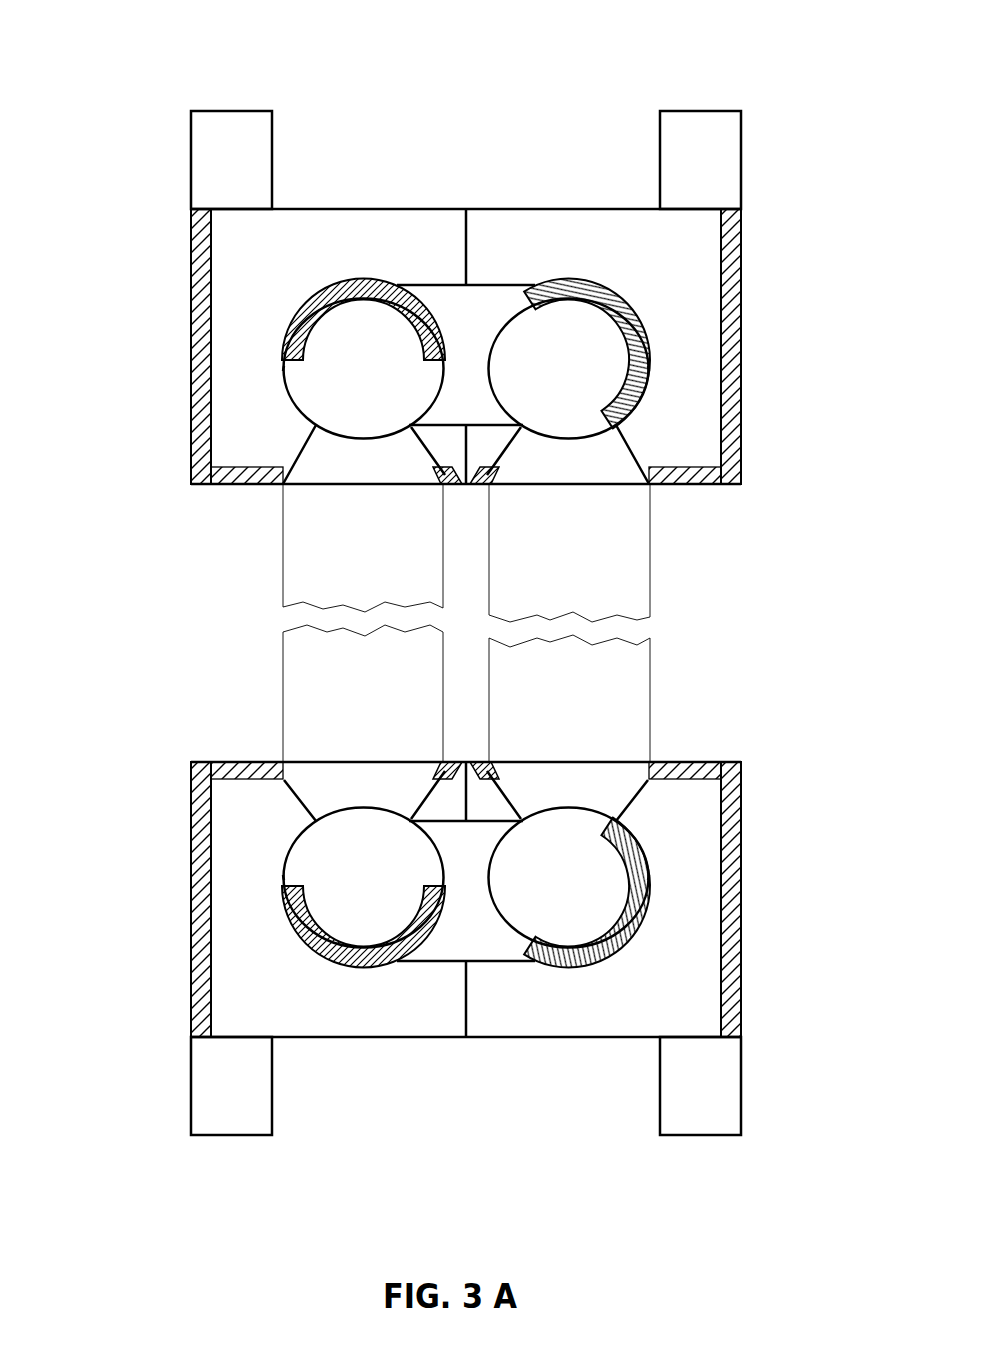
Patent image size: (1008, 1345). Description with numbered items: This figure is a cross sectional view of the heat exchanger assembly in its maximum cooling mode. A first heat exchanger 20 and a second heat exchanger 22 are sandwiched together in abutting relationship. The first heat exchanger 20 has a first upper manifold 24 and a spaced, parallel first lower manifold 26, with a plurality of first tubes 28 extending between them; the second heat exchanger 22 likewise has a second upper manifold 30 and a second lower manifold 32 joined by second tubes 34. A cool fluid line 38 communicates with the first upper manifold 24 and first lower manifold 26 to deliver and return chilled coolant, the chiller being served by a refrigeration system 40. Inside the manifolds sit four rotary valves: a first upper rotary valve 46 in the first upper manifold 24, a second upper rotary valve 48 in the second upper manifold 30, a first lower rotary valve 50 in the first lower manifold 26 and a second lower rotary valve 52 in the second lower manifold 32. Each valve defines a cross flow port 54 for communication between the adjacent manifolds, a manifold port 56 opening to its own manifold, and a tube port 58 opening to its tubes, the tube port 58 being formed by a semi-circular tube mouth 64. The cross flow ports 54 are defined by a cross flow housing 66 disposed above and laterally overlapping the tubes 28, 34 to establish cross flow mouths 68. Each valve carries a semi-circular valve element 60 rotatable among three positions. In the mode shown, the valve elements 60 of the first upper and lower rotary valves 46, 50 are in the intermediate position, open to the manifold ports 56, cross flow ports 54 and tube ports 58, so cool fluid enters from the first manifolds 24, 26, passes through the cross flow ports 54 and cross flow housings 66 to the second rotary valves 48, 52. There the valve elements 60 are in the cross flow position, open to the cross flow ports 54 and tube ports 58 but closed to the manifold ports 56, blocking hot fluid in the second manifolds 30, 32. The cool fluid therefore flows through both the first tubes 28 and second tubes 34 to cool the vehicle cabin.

The first heat exchanger 20 is at (190, 87).
The second heat exchanger 22 is at (733, 90).
The first upper manifold 24 is at (270, 408).
The first lower manifold 26 is at (270, 838).
The first tubes 28 is at (291, 578).
The second upper manifold 30 is at (662, 408).
The second lower manifold 32 is at (662, 838).
The second tubes 34 is at (637, 588).
The cool fluid line 38 is at (200, 143).
The refrigeration system 40 is at (733, 148).
The first upper rotary valve 46 is at (312, 290).
The second upper rotary valve 48 is at (632, 298).
The first lower rotary valve 50 is at (312, 956).
The second lower rotary valve 52 is at (633, 952).
The cross flow port 54 is at (493, 367).
The manifold port 56 is at (283, 371).
The tube port 58 is at (372, 439).
The semi-circular valve element 60 is at (287, 325).
The semi-circular tube mouth 64 is at (342, 437).
The cross flow housing 66 is at (437, 298).
The cross flow mouth 68 is at (497, 403).